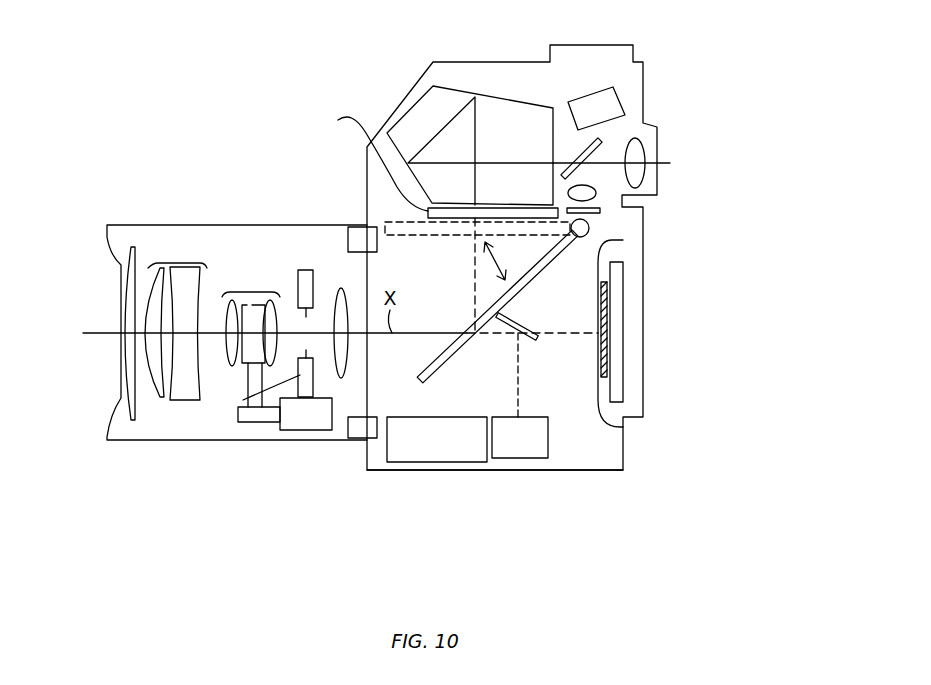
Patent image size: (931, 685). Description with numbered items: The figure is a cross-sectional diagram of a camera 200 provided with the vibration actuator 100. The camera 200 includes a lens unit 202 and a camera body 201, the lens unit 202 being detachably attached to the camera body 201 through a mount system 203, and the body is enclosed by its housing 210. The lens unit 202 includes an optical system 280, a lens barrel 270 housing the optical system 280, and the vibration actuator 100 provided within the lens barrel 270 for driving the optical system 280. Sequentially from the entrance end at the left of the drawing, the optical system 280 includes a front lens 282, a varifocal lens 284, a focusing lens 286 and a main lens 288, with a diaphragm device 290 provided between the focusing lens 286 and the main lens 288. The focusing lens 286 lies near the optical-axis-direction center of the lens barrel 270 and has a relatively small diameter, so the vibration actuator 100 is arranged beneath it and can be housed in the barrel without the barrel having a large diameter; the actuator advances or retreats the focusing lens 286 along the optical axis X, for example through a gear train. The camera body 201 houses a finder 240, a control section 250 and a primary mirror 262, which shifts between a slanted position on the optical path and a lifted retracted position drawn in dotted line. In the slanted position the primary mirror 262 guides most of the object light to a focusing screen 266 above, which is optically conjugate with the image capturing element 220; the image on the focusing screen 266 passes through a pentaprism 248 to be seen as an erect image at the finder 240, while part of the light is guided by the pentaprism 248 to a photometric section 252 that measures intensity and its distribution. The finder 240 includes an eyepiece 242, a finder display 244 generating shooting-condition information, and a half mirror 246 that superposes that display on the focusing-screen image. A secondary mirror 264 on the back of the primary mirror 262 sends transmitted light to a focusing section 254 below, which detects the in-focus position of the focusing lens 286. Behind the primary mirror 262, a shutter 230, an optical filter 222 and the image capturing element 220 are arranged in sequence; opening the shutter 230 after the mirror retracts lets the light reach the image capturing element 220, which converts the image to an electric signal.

The camera 200 is at (121, 34).
The camera body 201 is at (637, 510).
The lens unit 202 is at (127, 510).
The mount system 203 is at (358, 436).
The body housing 210 is at (626, 457).
The image capturing element 220 is at (612, 388).
The optical filter 222 is at (604, 406).
The shutter 230 is at (612, 240).
The finder 240 is at (742, 100).
The eyepiece 242 is at (645, 152).
The finder display 244 is at (600, 211).
The half mirror 246 is at (600, 140).
The pentaprism 248 is at (508, 118).
The control section 250 is at (437, 450).
The photometric section 252 is at (620, 100).
The focusing section 254 is at (517, 450).
The primary mirror 262 is at (440, 372).
The secondary mirror 264 is at (520, 318).
The focusing screen 266 is at (364, 160).
The lens barrel 270 is at (182, 441).
The optical system 280 is at (353, 150).
The front lens 282 is at (130, 245).
The varifocal lens 284 is at (175, 250).
The focusing lens 286 is at (253, 288).
The main lens 288 is at (340, 290).
The diaphragm device 290 is at (238, 404).
The vibration actuator 100 is at (305, 428).